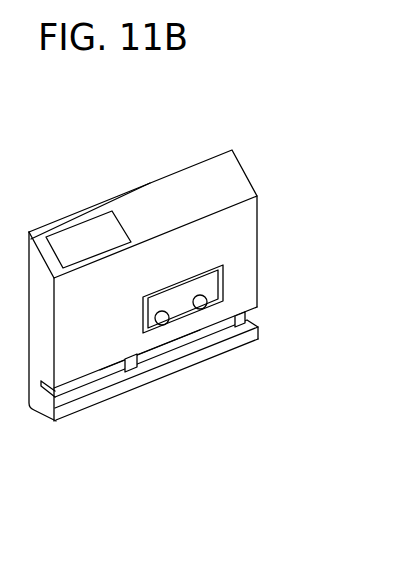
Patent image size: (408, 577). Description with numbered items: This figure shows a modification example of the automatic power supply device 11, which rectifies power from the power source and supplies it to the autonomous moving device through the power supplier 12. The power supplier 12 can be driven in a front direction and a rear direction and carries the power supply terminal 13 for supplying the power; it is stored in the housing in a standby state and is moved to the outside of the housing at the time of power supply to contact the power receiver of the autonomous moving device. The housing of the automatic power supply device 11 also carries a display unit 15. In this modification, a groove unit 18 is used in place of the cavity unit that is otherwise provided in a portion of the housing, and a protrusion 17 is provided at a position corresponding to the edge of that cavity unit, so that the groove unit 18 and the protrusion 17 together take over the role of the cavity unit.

The automatic power supply device 11 is at (228, 181).
The power supplier 12 is at (204, 327).
The power supply terminal 13 is at (170, 312).
The display unit 15 is at (84, 243).
The protrusion 17 is at (128, 372).
The groove unit 18 is at (132, 386).